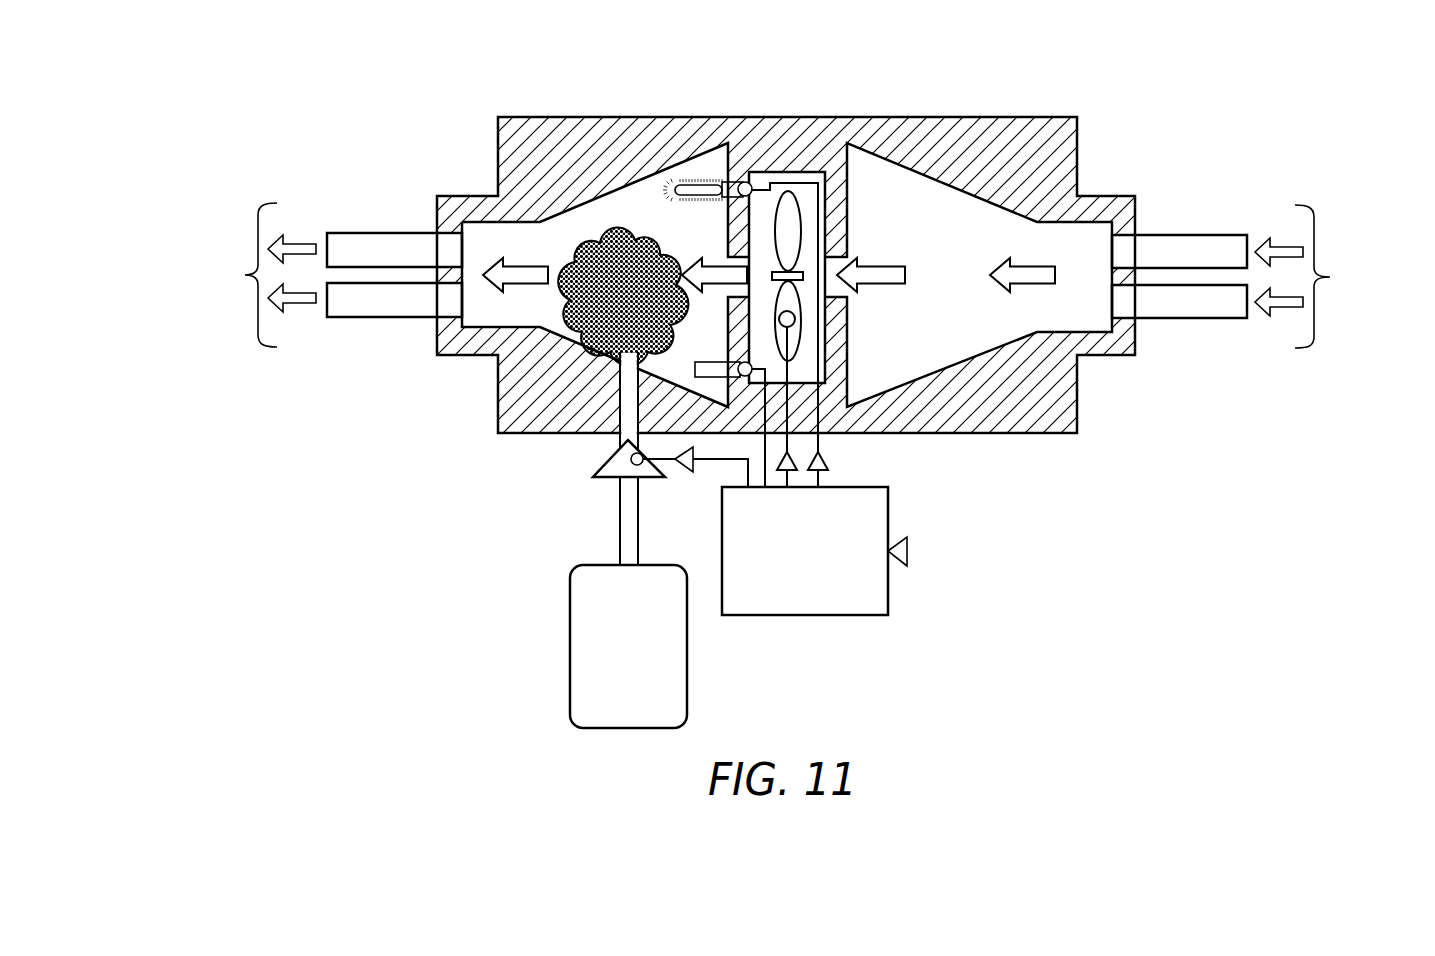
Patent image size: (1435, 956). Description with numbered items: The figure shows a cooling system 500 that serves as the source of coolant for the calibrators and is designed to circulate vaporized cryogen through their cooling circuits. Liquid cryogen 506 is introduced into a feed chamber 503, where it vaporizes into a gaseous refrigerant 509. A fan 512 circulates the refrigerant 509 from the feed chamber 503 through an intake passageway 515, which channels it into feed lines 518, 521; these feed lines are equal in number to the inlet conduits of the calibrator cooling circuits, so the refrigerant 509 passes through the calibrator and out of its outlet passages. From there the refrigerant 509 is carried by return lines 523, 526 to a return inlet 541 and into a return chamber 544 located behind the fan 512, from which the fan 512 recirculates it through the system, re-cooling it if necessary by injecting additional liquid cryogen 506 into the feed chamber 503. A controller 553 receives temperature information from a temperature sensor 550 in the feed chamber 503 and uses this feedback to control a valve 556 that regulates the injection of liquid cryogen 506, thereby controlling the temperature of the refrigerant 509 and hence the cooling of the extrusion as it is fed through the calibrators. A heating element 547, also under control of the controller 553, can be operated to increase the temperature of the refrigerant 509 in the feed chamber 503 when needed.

The cooling system 500 is at (1120, 123).
The feed chamber 503 is at (577, 233).
The liquid cryogen 506 is at (570, 665).
The gaseous refrigerant 509 is at (621, 262).
The fan 512 is at (788, 230).
The intake passageway 515 is at (478, 257).
The feed line 518 is at (363, 233).
The feed line 521 is at (371, 317).
The return line 523 is at (1185, 235).
The return line 526 is at (1187, 318).
The return inlet 541 is at (1088, 278).
The return chamber 544 is at (938, 333).
The heating element 547 is at (673, 193).
The temperature sensor 550 is at (708, 362).
The controller 553 is at (838, 615).
The valve 556 is at (607, 457).